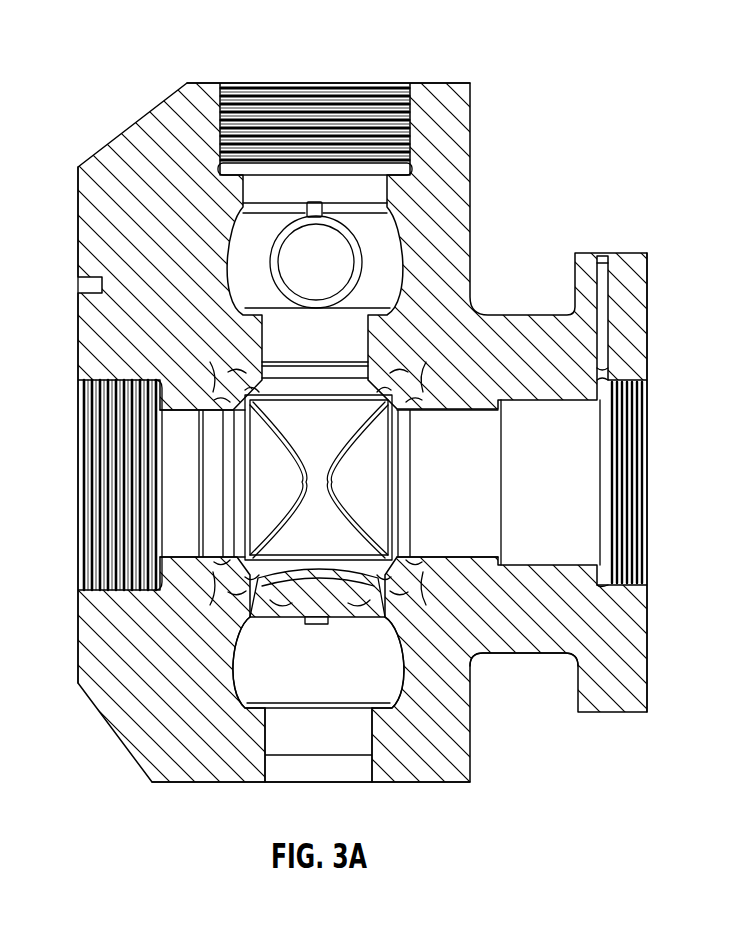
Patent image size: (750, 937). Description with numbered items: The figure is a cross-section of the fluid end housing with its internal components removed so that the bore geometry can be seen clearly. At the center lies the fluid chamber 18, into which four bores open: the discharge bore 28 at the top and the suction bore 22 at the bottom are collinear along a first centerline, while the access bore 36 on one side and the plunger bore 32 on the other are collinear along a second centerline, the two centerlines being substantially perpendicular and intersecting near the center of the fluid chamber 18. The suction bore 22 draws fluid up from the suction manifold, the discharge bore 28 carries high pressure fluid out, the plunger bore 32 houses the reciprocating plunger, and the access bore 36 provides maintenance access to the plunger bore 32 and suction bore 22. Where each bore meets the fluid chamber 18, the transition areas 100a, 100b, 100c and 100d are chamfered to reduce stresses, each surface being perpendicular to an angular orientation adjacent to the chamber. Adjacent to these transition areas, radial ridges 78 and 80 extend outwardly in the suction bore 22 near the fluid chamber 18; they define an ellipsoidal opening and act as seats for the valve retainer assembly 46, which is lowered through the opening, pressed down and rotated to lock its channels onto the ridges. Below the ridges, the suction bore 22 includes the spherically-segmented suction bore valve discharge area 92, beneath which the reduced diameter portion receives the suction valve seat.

The fluid chamber 18 is at (318, 505).
The suction bore 22 is at (335, 748).
The discharge bore 28 is at (363, 190).
The plunger bore 32 is at (473, 455).
The access bore 36 is at (187, 476).
The valve retainer assembly 46 is at (390, 622).
The radial ridge 78 is at (255, 585).
The radial ridge 80 is at (477, 657).
The spherically-segmented suction bore valve discharge area 92 is at (378, 263).
The transition area 100a is at (218, 385).
The transition area 100b is at (418, 395).
The transition area 100c is at (233, 560).
The transition area 100d is at (425, 572).